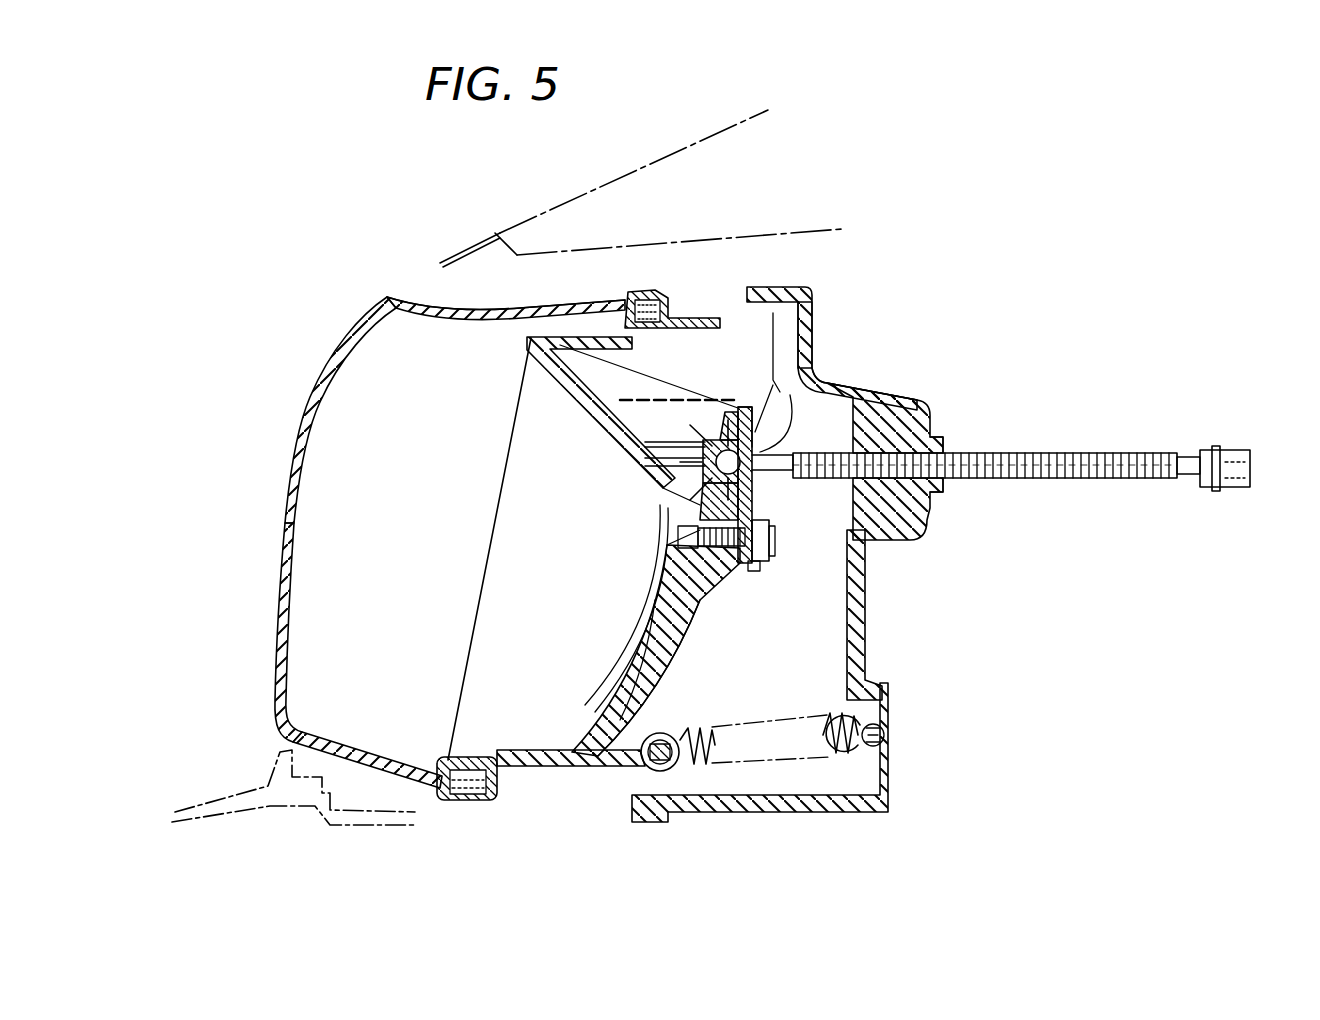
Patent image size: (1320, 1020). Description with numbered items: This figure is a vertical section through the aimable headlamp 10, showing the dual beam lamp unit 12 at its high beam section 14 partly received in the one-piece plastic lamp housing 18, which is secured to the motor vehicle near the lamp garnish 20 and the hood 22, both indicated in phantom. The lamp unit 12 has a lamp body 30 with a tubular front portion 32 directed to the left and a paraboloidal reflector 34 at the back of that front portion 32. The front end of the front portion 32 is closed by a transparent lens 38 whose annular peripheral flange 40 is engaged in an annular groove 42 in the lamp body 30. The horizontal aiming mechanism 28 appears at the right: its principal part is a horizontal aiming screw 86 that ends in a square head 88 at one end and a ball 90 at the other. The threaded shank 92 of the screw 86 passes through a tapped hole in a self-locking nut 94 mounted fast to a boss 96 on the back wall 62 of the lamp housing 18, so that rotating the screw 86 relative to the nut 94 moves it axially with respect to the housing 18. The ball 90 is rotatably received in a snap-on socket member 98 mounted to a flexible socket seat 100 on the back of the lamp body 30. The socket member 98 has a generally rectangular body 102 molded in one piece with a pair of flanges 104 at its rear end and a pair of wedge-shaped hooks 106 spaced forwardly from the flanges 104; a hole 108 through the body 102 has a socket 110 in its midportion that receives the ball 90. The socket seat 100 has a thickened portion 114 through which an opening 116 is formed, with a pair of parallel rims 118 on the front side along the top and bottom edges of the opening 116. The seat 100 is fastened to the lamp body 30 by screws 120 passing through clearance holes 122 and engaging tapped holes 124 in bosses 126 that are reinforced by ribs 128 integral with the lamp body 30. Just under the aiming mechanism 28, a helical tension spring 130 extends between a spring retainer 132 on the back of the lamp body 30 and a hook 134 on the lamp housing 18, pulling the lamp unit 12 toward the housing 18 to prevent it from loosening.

The aimable headlamp 10 is at (360, 248).
The lamp unit 12 is at (340, 335).
The high beam section 14 is at (340, 408).
The lamp housing 18 is at (820, 812).
The lamp garnish 20 is at (232, 800).
The hood 22 is at (542, 200).
The horizontal aiming mechanism 28 is at (882, 358).
The lamp body 30 is at (700, 310).
The tubular front portion 32 is at (545, 770).
The paraboloidal reflector 34 is at (632, 665).
The lens 38 is at (290, 515).
The annular peripheral flange 40 is at (376, 766).
The annular groove 42 is at (470, 800).
The back wall 62 is at (866, 631).
The horizontal aiming screw 86 is at (1112, 450).
The square head 88 is at (1225, 488).
The ball 90 is at (714, 470).
The threaded shank 92 is at (1062, 480).
The self-locking nut 94 is at (948, 448).
The boss 96 is at (910, 420).
The snap-on socket member 98 is at (800, 425).
The flexible socket seat 100 is at (748, 572).
The body 102 is at (715, 440).
The flanges 104 is at (758, 481).
The wedge-shaped hooks 106 is at (700, 506).
The hole 108 is at (770, 453).
The socket 110 is at (740, 430).
The thickened portion 114 is at (815, 347).
The opening 116 is at (770, 533).
The rims 118 is at (700, 531).
The screws 120 is at (774, 553).
The clearance holes 122 is at (762, 571).
The tapped holes 124 is at (672, 576).
The bosses 126 is at (600, 400).
The ribs 128 is at (540, 348).
The helical tension spring 130 is at (720, 770).
The spring retainer 132 is at (675, 816).
The hook 134 is at (893, 737).